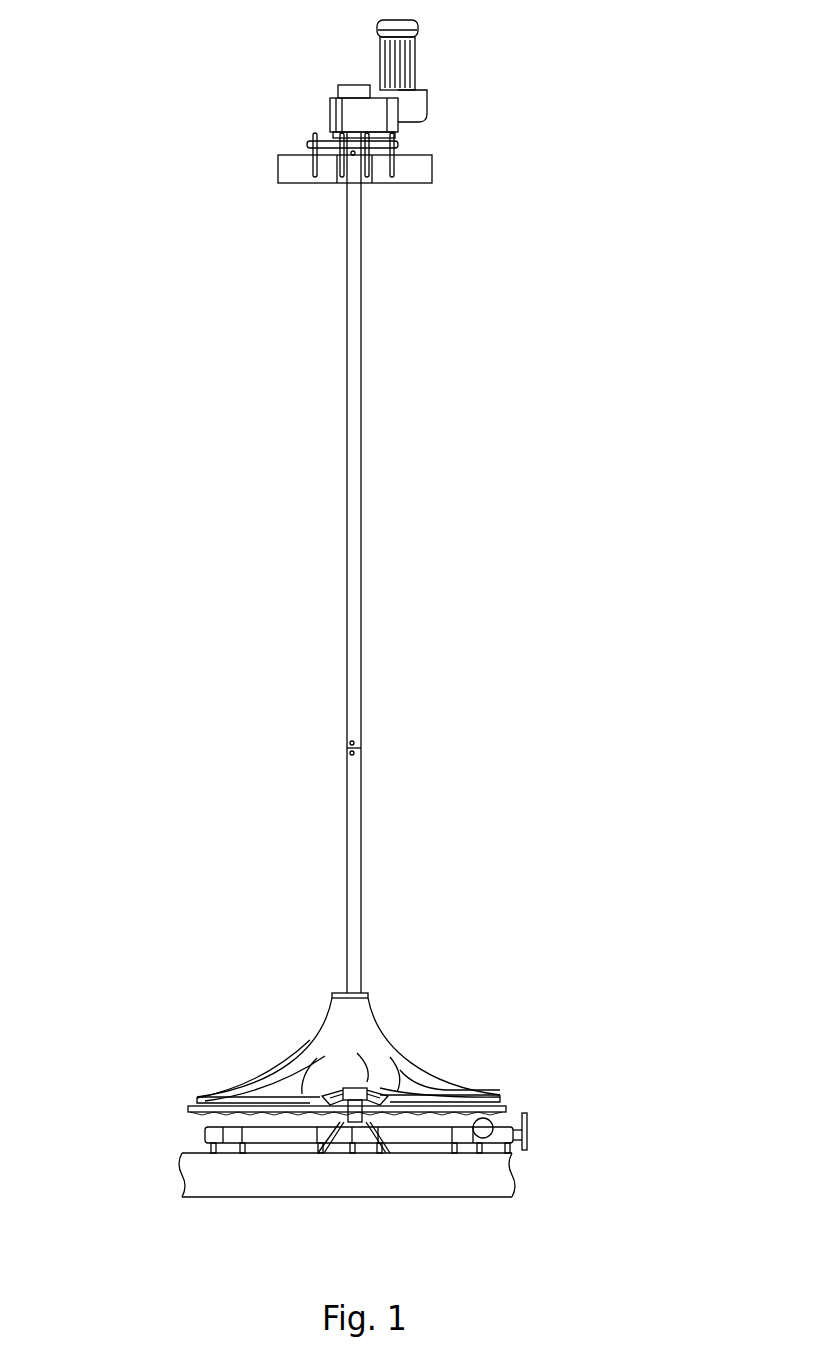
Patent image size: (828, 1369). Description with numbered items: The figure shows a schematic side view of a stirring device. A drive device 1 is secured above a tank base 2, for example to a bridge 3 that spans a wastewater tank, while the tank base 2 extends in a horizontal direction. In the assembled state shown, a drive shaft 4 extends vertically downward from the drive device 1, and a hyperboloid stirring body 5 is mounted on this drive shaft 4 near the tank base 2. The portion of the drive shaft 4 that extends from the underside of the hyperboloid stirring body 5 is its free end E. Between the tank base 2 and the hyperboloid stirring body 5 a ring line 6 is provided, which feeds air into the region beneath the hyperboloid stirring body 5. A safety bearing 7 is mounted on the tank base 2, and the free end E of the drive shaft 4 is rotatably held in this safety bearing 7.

The drive device 1 is at (420, 106).
The tank base 2 is at (498, 1183).
The bridge 3 is at (420, 172).
The drive shaft 4 is at (355, 360).
The hyperboloid stirring body 5 is at (365, 1032).
The ring line 6 is at (518, 1133).
The safety bearing 7 is at (390, 1120).
The free end of the drive shaft E is at (333, 1095).